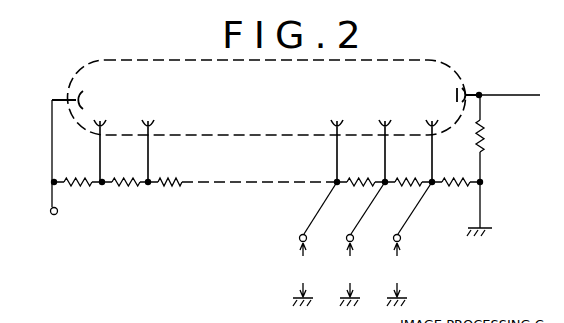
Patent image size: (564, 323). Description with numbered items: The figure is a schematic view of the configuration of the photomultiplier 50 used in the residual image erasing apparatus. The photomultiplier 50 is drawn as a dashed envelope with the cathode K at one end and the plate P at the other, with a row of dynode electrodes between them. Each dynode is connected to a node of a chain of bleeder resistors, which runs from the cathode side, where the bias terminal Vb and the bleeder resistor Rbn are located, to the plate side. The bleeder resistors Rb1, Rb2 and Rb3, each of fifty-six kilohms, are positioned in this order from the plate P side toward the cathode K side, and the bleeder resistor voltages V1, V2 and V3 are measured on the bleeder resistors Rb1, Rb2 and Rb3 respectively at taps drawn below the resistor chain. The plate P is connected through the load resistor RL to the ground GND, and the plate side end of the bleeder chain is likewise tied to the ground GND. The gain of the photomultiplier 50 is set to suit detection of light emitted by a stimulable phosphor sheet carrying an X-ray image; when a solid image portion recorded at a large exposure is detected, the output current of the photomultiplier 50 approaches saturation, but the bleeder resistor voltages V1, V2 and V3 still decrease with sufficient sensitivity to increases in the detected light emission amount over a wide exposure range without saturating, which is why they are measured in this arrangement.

The photomultiplier 50 is at (291, 105).
The cathode K is at (74, 94).
The plate P is at (459, 86).
The bias voltage supply terminal Vb is at (51, 172).
The bleeder resistor n Rbn is at (75, 168).
The bleeder resistor Rb3 is at (357, 168).
The bleeder resistor Rb2 is at (405, 168).
The bleeder resistor Rb1 is at (454, 168).
The load resistor RL is at (495, 136).
The ground GND is at (499, 232).
The bleeder resistor voltage V3 is at (312, 244).
The bleeder resistor voltage V2 is at (360, 244).
The bleeder resistor voltage V1 is at (407, 244).